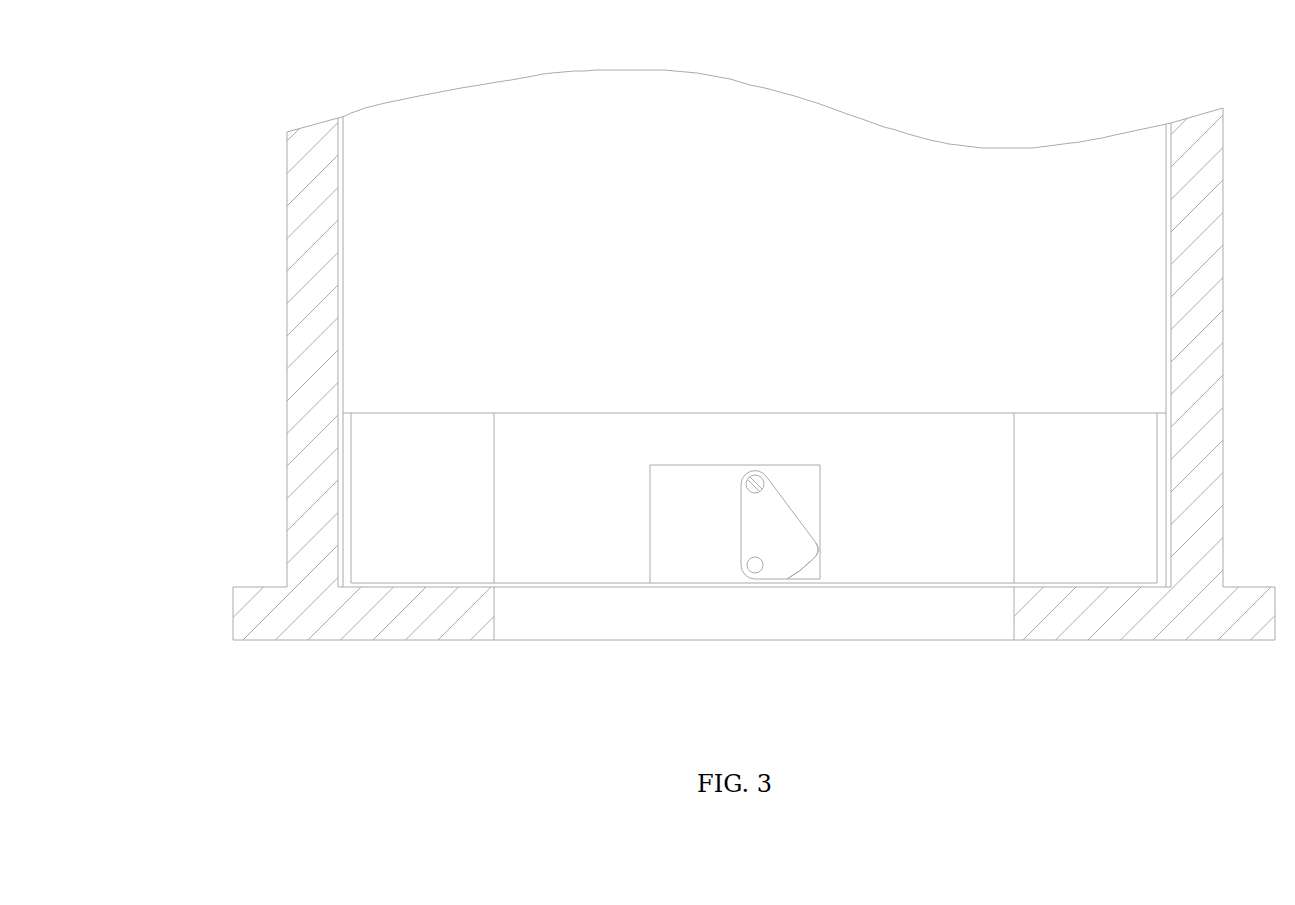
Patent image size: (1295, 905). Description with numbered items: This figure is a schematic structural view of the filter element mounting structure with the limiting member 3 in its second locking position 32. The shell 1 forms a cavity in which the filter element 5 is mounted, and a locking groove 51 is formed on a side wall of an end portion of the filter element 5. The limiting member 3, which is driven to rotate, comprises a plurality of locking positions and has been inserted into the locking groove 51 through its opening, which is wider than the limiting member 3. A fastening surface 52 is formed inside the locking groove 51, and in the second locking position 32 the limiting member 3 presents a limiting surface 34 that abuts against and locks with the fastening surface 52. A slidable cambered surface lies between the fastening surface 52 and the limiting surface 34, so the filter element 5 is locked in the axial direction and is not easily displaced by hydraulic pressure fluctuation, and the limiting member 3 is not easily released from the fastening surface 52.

The shell 1 is at (315, 360).
The filter element 5 is at (420, 145).
The locking groove 51 is at (650, 525).
The second locking position 32 is at (737, 565).
The limiting member 3 is at (772, 565).
The fastening surface 52 is at (803, 567).
The limiting surface 34 is at (815, 563).